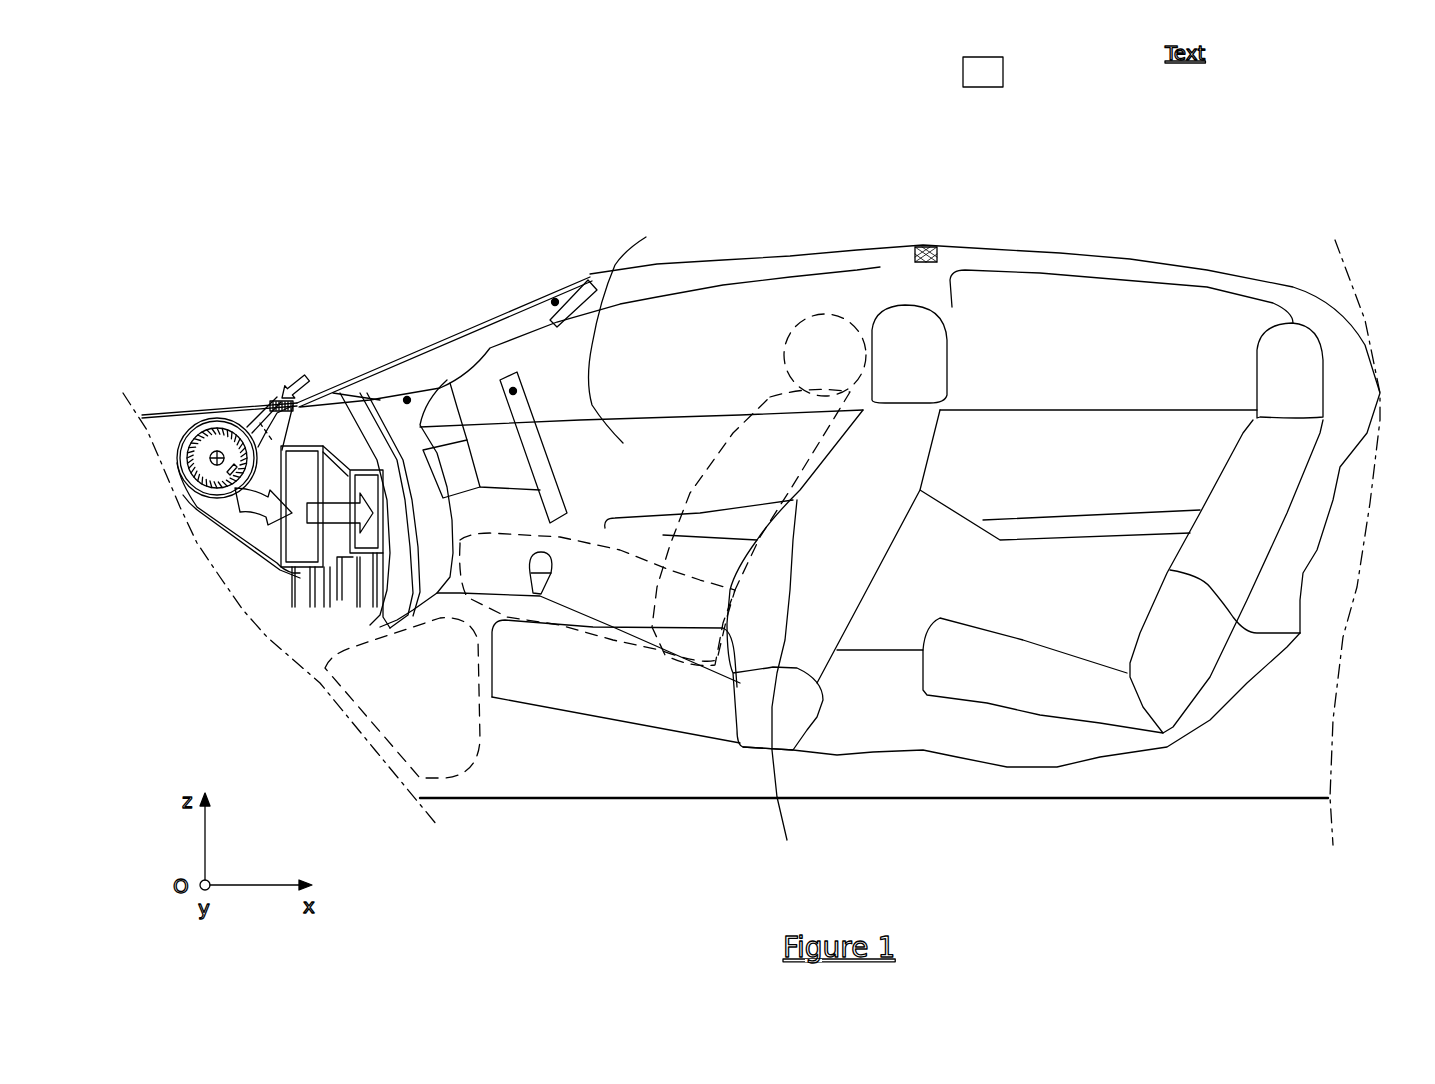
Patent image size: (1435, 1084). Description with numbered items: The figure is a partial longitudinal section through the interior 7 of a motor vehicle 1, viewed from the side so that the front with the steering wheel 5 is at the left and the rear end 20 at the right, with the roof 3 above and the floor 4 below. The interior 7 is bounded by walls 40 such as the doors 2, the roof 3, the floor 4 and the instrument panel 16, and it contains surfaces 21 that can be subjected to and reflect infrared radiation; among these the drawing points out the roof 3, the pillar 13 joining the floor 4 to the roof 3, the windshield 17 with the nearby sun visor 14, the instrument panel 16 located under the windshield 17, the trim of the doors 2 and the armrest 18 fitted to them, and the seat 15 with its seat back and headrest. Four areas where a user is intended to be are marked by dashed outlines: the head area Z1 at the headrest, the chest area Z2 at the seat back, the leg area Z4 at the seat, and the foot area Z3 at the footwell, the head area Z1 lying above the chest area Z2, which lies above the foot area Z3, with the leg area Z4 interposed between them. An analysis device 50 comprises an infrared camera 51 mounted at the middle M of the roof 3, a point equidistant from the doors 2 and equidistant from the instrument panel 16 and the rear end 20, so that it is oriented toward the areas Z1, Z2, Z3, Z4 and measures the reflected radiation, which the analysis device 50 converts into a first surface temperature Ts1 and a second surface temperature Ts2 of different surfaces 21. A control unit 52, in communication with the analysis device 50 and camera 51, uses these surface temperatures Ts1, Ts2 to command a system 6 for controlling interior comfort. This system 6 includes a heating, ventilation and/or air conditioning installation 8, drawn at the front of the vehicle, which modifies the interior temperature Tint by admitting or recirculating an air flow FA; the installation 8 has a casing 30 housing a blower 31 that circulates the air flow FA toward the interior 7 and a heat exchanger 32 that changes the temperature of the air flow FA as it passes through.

The motor vehicle 1 is at (470, 228).
The doors 2 is at (838, 475).
The roof 3 is at (950, 245).
The floor 4 is at (847, 800).
The steering wheel 5 is at (405, 398).
The system for controlling the comfort of the interior 6 is at (306, 698).
The interior 7 is at (782, 298).
The heating, ventilation and/or air conditioning installation 8 is at (218, 368).
The pillar 13 is at (900, 293).
The sun visor 14 is at (580, 278).
The seat 15 is at (1025, 536).
The instrument panel 16 is at (407, 398).
The windshield 17 is at (515, 322).
The armrest 18 is at (788, 686).
The rear end 20 is at (1389, 390).
The surfaces 21 is at (527, 308).
The casing 30 is at (272, 518).
The blower 31 is at (200, 445).
The heat exchanger 32 is at (265, 560).
The walls 40 is at (629, 328).
The analysis device 50 is at (993, 229).
The infrared camera 51 is at (927, 237).
The control unit 52 is at (937, 238).
The air flow FA is at (267, 545).
The middle of the roof M is at (911, 168).
The first surface temperature Ts1 is at (555, 300).
The second surface temperature Ts2 is at (513, 391).
The interior temperature Tint is at (1038, 346).
The head area Z1 is at (830, 340).
The chest area Z2 is at (768, 452).
The foot area Z3 is at (434, 715).
The leg area Z4 is at (619, 583).